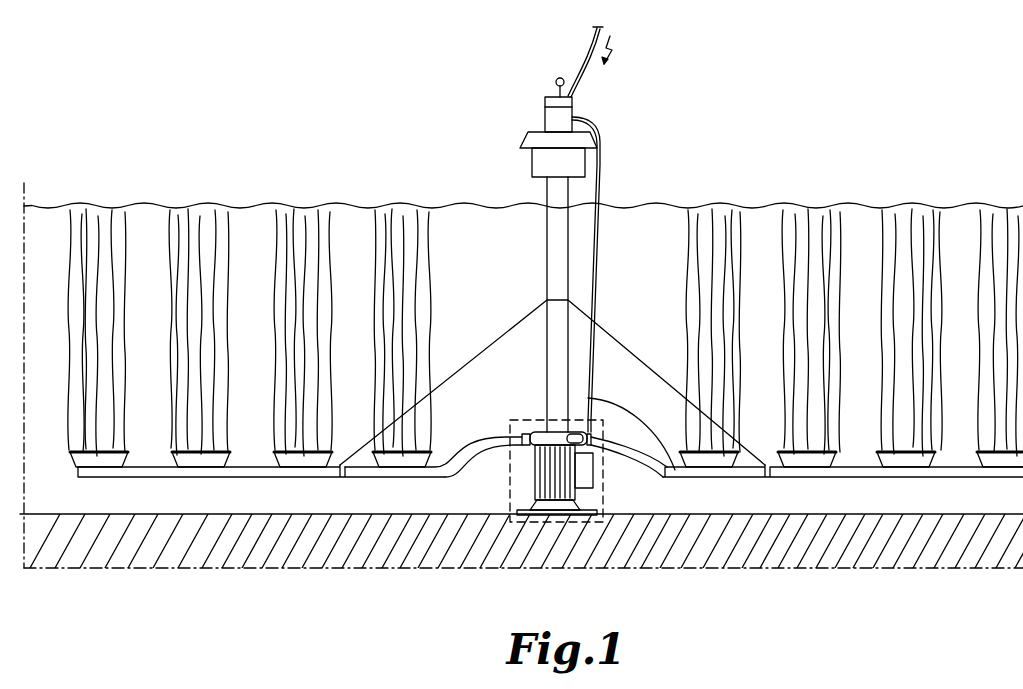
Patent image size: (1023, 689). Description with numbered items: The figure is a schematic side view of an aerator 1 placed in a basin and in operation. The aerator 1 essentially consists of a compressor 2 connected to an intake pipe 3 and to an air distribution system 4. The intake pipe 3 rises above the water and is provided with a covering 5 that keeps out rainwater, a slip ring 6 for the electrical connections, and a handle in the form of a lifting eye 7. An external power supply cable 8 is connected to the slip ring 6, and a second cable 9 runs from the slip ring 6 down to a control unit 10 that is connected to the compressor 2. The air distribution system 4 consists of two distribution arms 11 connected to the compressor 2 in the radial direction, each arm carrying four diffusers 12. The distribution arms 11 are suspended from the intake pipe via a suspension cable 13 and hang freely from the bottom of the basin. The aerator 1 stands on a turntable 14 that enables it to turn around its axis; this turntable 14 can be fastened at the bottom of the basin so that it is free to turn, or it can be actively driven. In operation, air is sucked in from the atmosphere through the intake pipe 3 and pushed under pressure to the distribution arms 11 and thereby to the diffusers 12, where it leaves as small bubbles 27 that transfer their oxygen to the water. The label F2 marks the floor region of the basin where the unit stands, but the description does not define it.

The aerator 1 is at (658, 136).
The compressor 2 is at (565, 478).
The intake pipe 3 is at (557, 268).
The air distribution system 4 is at (458, 467).
The covering 5 is at (587, 141).
The slip ring 6 is at (562, 110).
The lifting eye 7 is at (558, 78).
The external power supply cable 8 is at (578, 73).
The second cable 9 is at (675, 470).
The control unit 10 is at (615, 447).
The distribution arms 11 is at (308, 470).
The diffusers 12 is at (108, 457).
The suspension cable 13 is at (488, 347).
The turntable 14 is at (550, 510).
The small bubbles 27 is at (880, 265).
The floor F2 is at (512, 516).